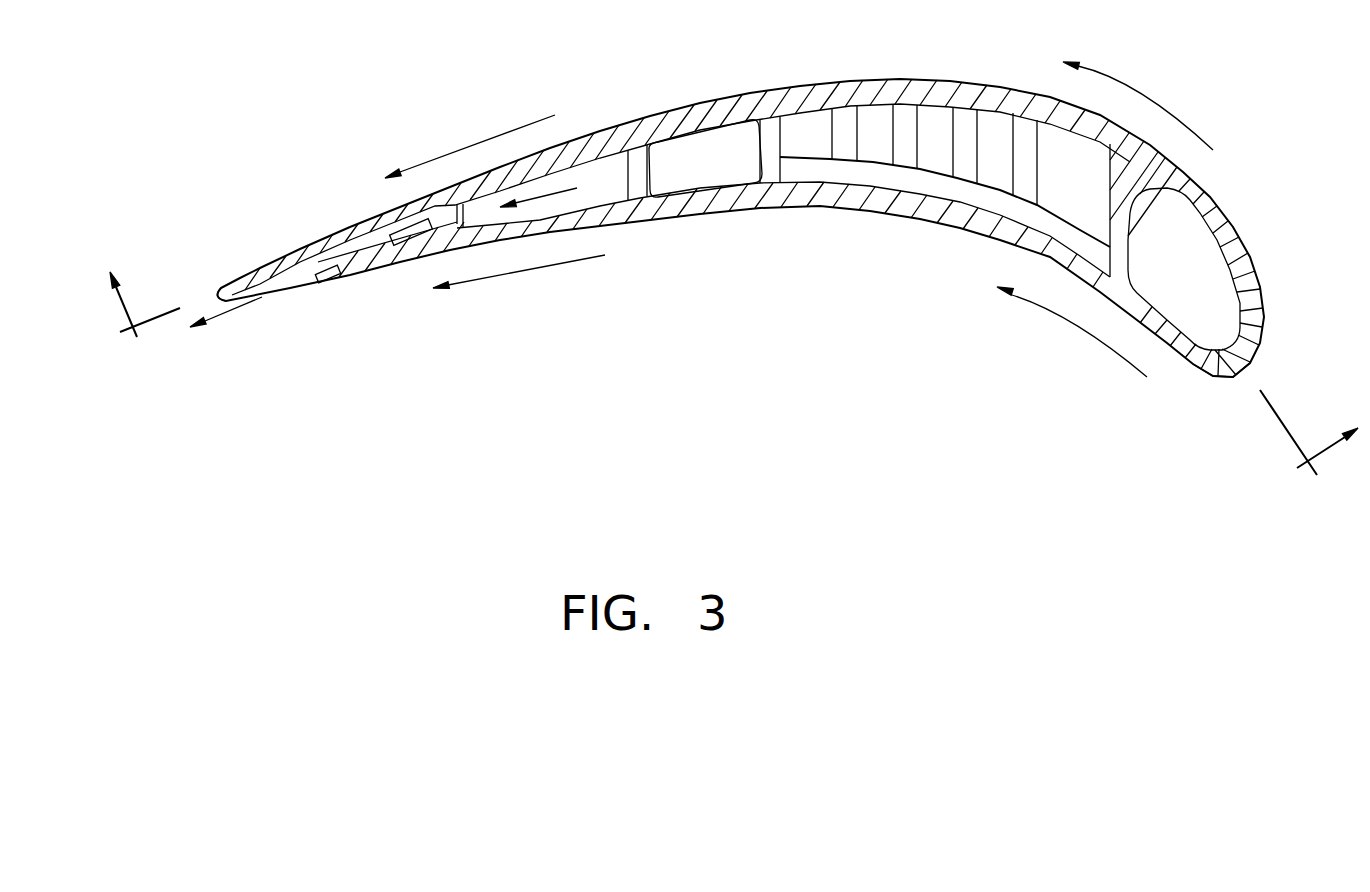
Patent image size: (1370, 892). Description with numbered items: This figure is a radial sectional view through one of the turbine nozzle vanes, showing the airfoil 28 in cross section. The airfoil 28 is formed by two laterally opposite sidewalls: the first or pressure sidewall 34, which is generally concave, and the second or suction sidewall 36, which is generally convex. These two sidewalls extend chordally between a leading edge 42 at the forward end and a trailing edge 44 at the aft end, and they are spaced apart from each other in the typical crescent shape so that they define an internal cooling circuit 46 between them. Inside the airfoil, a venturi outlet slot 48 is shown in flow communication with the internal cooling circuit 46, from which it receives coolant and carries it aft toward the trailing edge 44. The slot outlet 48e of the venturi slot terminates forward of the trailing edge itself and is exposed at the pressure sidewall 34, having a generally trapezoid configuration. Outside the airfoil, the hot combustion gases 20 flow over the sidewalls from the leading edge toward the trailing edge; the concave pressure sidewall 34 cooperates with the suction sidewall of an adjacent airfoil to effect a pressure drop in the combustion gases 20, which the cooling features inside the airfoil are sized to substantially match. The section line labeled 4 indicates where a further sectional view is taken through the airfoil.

The combustion gases 20 is at (1168, 107).
The airfoil 28 is at (1252, 226).
The first sidewall 34 is at (883, 215).
The second sidewall 36 is at (870, 82).
The leading edge 42 is at (1240, 383).
The trailing edge 44 is at (217, 293).
The internal cooling circuit 46 is at (686, 151).
The venturi outlet slot 48 is at (323, 251).
The slot outlet 48e is at (290, 292).
The section line 4- 4 is at (719, 373).